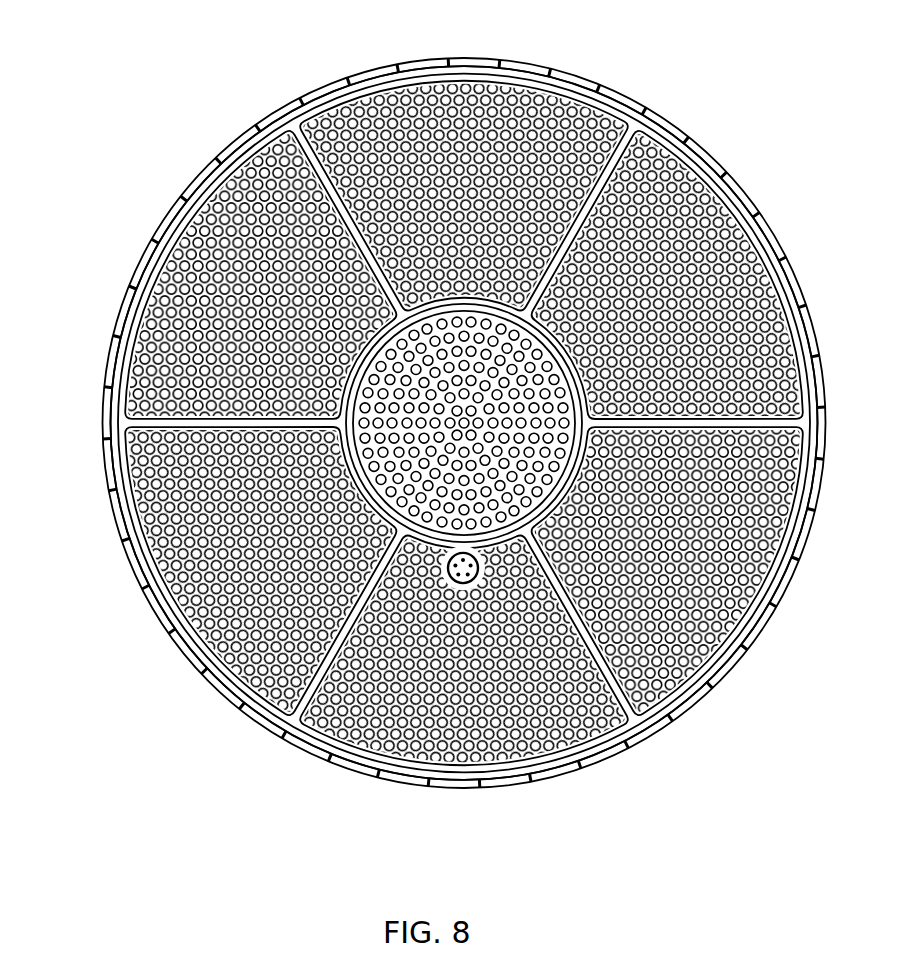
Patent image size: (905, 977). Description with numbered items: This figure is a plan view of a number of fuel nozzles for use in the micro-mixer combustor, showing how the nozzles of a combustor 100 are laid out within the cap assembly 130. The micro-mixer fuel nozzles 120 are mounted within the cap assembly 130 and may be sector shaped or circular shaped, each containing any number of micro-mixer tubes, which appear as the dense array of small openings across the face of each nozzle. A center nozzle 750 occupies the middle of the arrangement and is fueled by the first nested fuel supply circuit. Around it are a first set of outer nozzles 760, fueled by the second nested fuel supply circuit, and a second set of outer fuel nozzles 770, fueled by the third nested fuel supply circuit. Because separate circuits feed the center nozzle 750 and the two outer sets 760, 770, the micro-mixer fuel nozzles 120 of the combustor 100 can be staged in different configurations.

The combustor 100 is at (464, 423).
The micro-mixer fuel nozzles 120 is at (464, 436).
The cap assembly 130 is at (445, 423).
The center nozzle 750 is at (463, 434).
The first set of outer nozzles 760 is at (493, 403).
The second set of outer fuel nozzles 770 is at (440, 457).